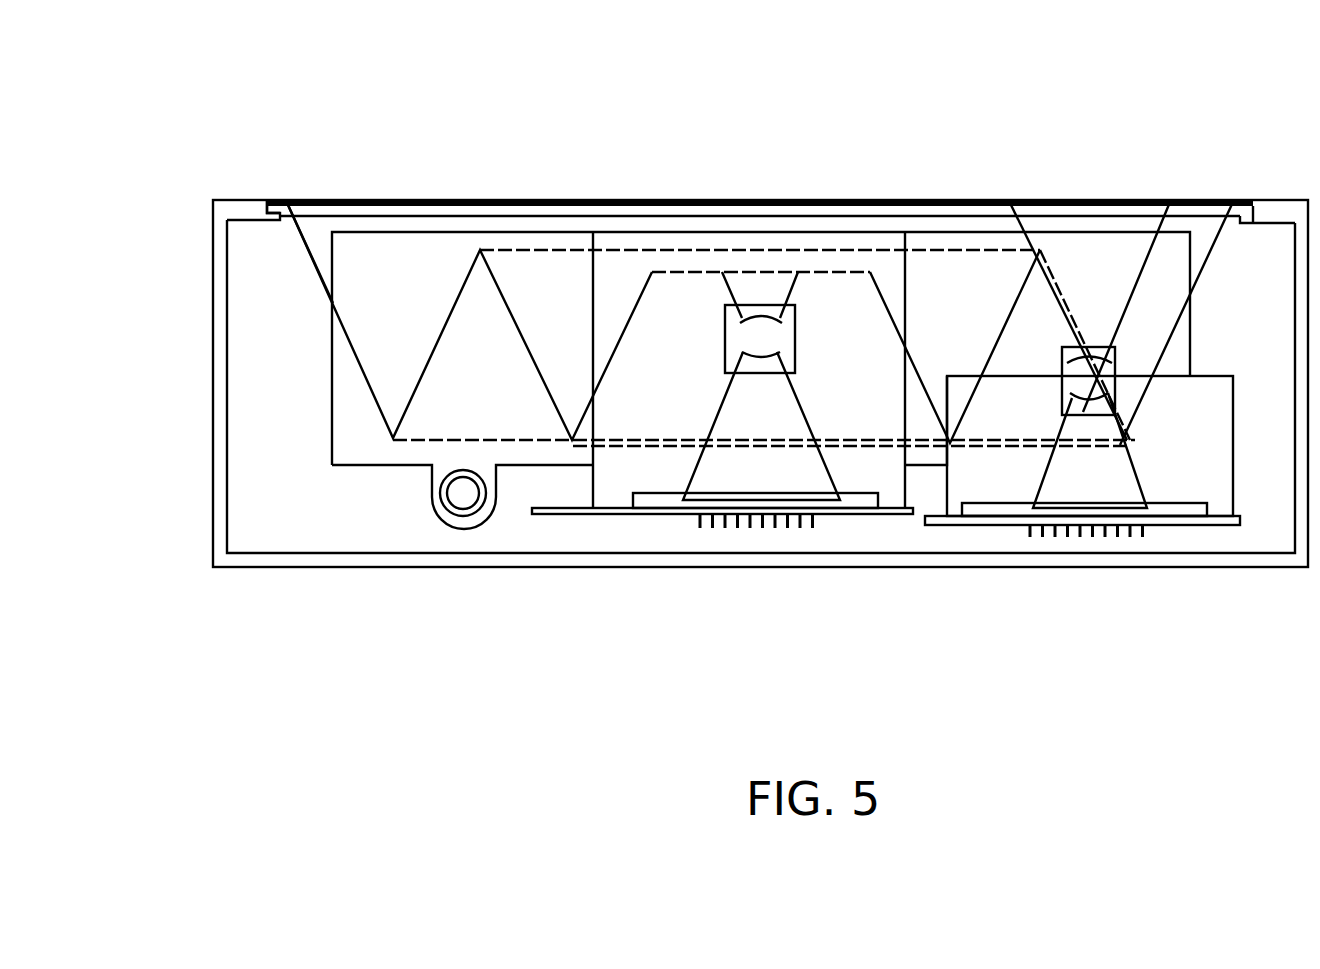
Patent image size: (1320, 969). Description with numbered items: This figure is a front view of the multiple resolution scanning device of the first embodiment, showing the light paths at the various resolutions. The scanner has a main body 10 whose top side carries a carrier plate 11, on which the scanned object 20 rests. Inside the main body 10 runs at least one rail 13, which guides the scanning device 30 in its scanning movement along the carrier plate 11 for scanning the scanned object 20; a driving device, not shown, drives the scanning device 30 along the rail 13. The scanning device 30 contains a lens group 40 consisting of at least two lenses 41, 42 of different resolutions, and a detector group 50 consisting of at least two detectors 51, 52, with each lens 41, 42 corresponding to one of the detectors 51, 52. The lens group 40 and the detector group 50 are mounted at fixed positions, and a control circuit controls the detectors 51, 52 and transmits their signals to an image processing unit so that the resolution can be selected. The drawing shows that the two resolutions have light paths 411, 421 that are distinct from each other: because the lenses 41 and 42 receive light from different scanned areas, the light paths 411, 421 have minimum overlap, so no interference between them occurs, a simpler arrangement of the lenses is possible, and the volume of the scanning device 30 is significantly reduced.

The main body 10 is at (248, 558).
The carrier plate 11 is at (387, 203).
The rail 13 is at (463, 497).
The scanned object 20 is at (565, 203).
The scanning device 30 is at (314, 420).
The lens group 40 is at (886, 262).
The lens 41 is at (757, 317).
The lens 42 is at (1072, 347).
The light path 411 is at (312, 265).
The light path 421 is at (1150, 258).
The detector group 50 is at (580, 556).
The detector 51 is at (775, 514).
The detector 52 is at (1073, 516).